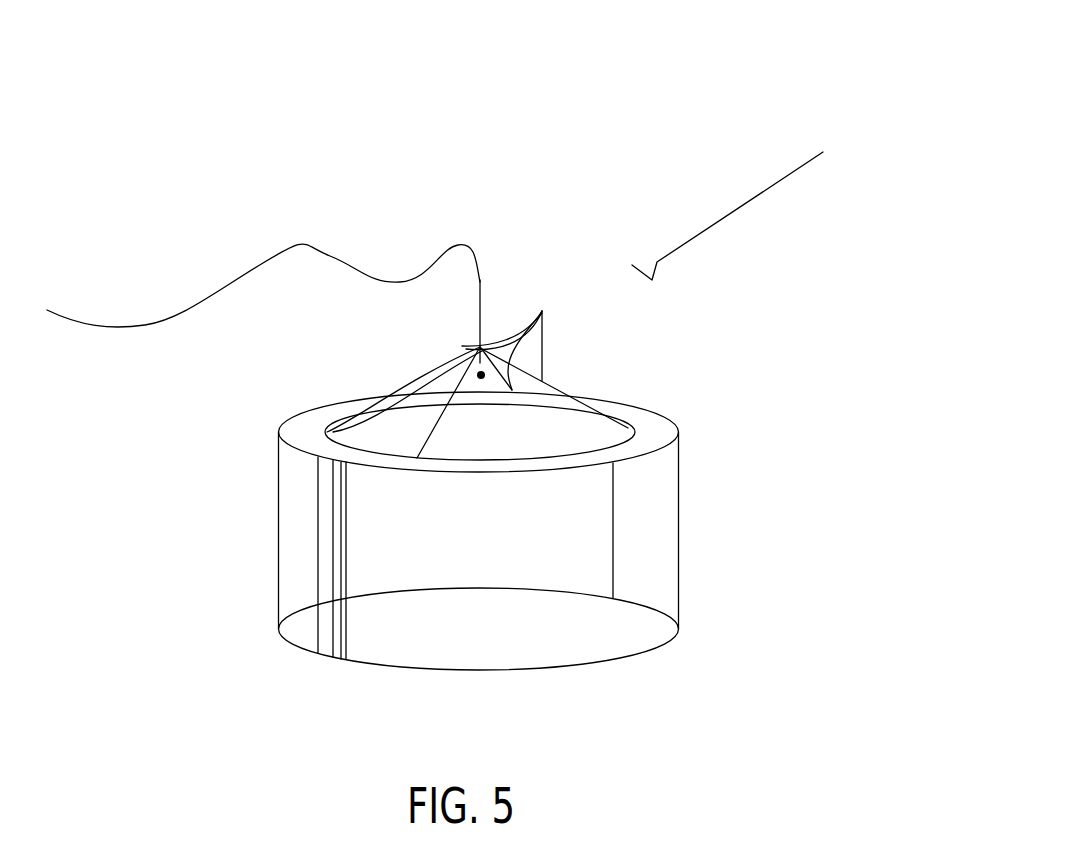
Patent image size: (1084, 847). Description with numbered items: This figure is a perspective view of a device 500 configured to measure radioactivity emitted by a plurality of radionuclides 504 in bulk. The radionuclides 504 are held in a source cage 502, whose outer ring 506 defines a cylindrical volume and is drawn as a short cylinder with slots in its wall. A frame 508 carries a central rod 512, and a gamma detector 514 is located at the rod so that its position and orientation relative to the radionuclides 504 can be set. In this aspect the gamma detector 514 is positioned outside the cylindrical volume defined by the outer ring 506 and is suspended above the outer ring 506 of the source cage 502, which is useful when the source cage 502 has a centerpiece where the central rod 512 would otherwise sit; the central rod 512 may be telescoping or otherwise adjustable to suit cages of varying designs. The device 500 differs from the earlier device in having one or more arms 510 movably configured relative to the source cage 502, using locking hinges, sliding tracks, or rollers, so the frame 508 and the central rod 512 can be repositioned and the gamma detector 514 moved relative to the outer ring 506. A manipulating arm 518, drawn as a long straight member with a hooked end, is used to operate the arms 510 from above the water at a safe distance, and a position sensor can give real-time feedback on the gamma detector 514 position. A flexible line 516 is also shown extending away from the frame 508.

The device 500 is at (640, 76).
The source cage 502 is at (703, 483).
The radionuclides 504 is at (346, 547).
The outer ring 506 is at (648, 410).
The frame 508 is at (489, 293).
The arms 510 is at (515, 331).
The central rod 512 is at (478, 308).
The gamma detector 514 is at (481, 379).
The lead 516 is at (300, 246).
The manipulating arm 518 is at (733, 204).